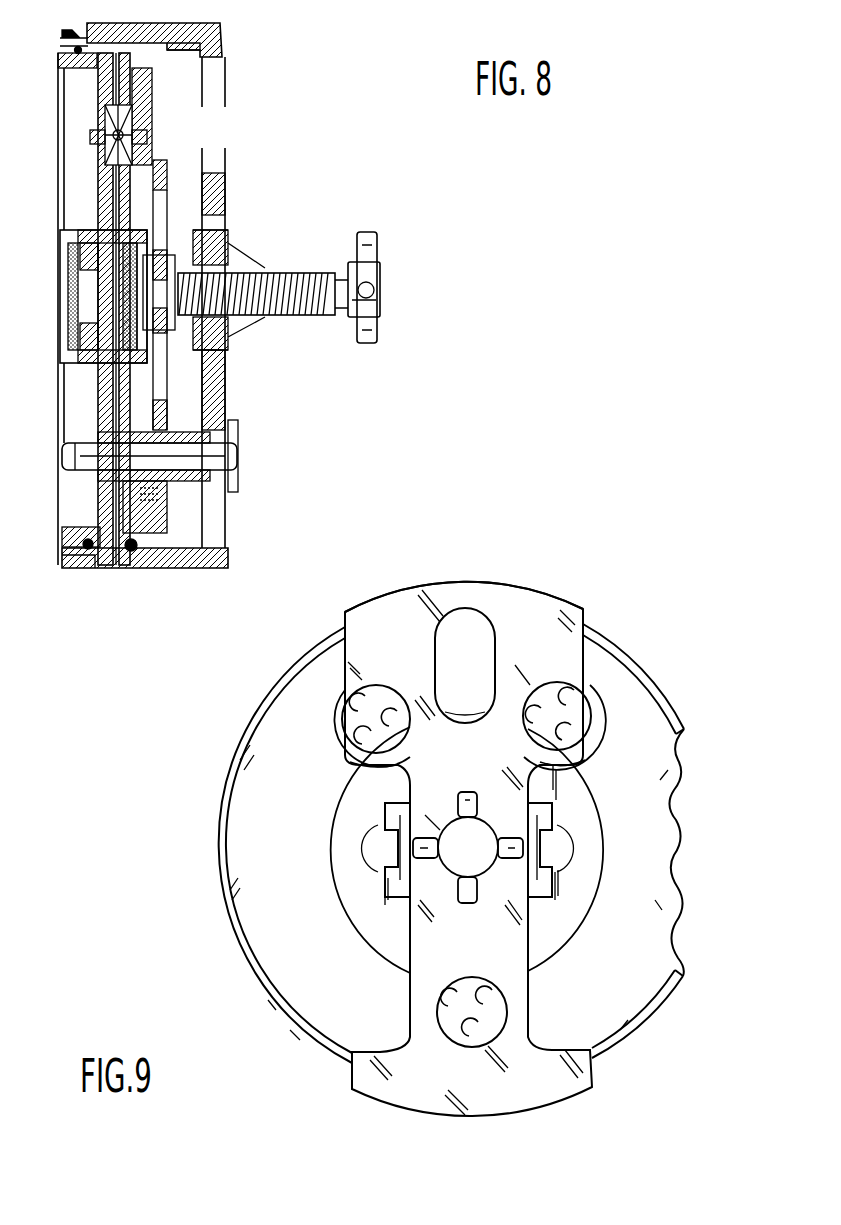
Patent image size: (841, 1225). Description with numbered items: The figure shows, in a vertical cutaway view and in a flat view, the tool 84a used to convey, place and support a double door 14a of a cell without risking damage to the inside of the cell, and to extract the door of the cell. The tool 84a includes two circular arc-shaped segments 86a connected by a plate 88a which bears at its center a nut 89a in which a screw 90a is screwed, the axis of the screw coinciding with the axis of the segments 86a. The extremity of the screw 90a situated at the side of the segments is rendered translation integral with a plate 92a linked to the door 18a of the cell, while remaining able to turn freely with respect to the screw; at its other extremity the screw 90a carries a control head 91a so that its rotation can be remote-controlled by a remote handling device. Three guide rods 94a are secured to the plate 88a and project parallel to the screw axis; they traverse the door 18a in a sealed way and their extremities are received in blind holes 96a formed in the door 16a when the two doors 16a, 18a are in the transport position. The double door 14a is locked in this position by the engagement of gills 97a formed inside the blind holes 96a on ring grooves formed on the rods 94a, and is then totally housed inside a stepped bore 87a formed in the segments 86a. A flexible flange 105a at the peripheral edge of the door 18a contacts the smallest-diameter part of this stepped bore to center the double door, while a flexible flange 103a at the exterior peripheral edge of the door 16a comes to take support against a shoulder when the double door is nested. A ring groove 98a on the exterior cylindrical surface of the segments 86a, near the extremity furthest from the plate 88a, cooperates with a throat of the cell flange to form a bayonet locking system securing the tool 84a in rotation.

In FIG. 8, the double door 14a is at (40, 360).
In FIG. 9, the double door 14a is at (212, 920).
In FIG. 8, the door 16a is at (100, 193).
In FIG. 9, the door 16a is at (258, 802).
In FIG. 8, the door 18a is at (105, 100).
In FIG. 8, the tool 84a is at (283, 410).
In FIG. 9, the tool 84a is at (554, 572).
In FIG. 8, the circular arc-shaped segments 86a is at (180, 28).
In FIG. 8, the stepped bore 87a is at (100, 45).
In FIG. 8, the plate 88a is at (210, 195).
In FIG. 9, the plate 88a is at (547, 630).
In FIG. 8, the nut 89a is at (203, 228).
In FIG. 9, the screw 90a is at (484, 866).
In FIG. 8, the control head 91a is at (370, 265).
In FIG. 8, the plate 92a is at (180, 395).
In FIG. 9, the plate 92a is at (570, 900).
In FIG. 8, the guide rods 94a is at (212, 455).
In FIG. 8, the blind holes 96a is at (96, 440).
In FIG. 8, the gills 97a is at (68, 478).
In FIG. 8, the ring groove 98a is at (78, 570).
In FIG. 8, the flexible flange 103a is at (72, 32).
In FIG. 8, the flexible flange 105a is at (165, 55).